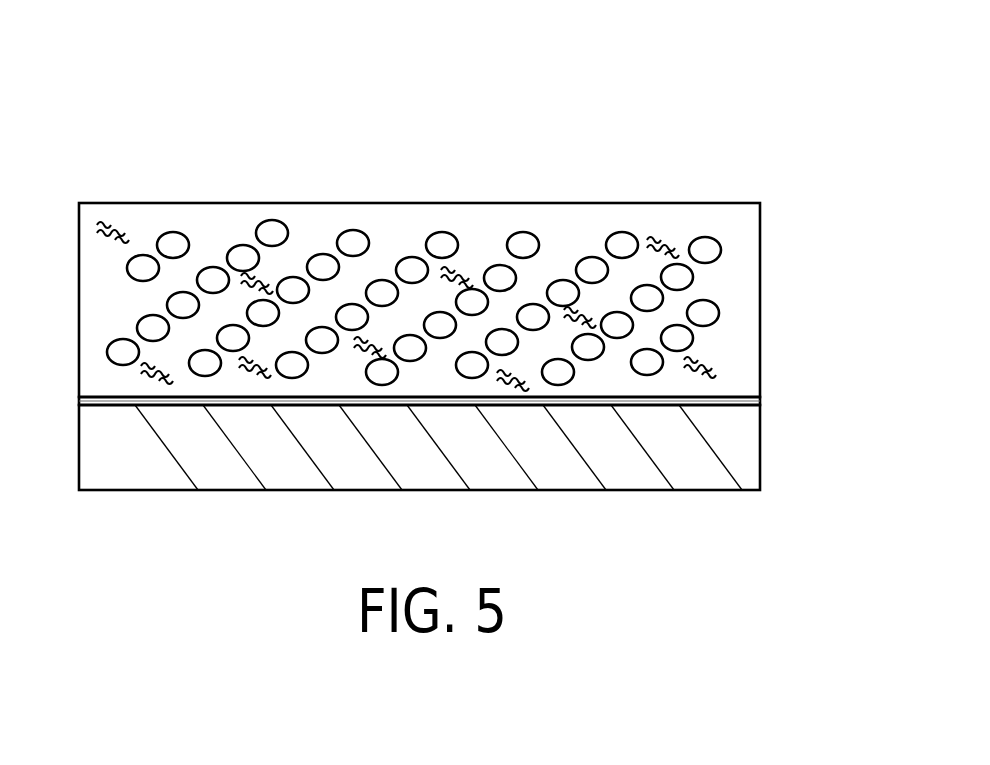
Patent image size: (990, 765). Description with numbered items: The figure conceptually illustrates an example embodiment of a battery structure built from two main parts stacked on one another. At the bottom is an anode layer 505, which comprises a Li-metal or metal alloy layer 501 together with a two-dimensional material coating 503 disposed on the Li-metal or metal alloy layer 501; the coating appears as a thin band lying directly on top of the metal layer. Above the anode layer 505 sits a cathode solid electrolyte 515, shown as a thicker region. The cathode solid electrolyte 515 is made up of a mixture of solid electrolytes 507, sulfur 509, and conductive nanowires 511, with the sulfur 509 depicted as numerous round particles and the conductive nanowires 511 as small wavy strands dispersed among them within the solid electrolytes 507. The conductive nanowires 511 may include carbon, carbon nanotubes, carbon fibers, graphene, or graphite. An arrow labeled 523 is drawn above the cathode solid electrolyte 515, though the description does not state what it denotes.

The Li-metal or metal alloy layer 501 is at (880, 393).
The 2D material coating 503 is at (760, 403).
The anode layer 505 is at (521, 441).
The solid electrolytes 507 is at (728, 333).
The sulfur 509 is at (718, 313).
The conductive nanowires 511 is at (672, 240).
The cathode solid electrolyte 515 is at (517, 257).
The incident light direction 523 is at (535, 155).